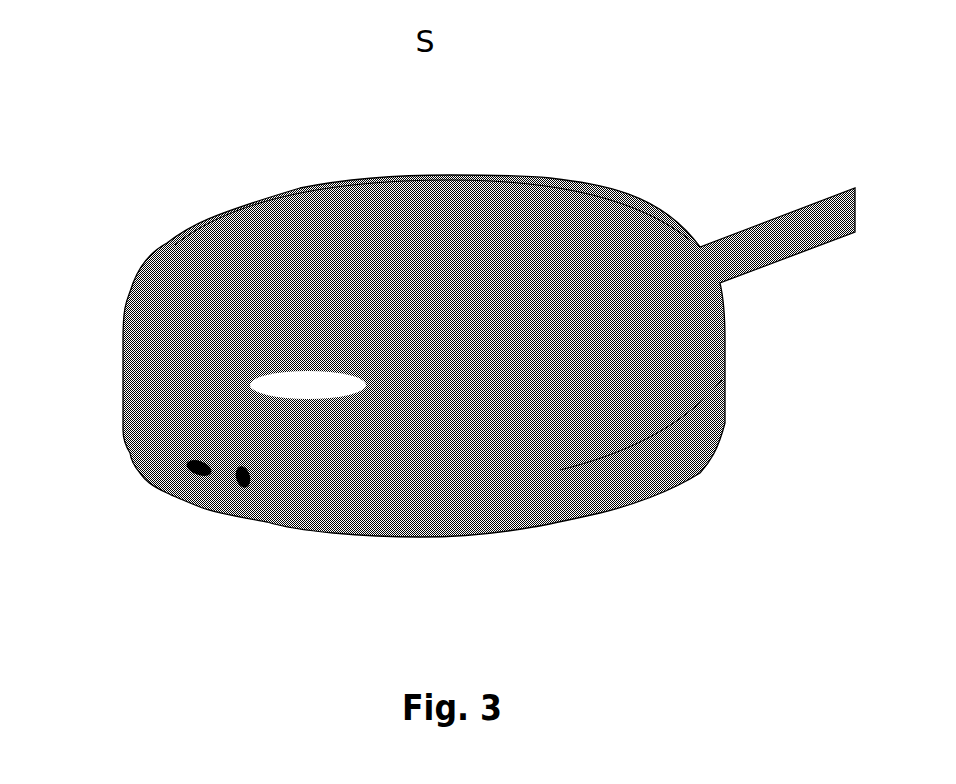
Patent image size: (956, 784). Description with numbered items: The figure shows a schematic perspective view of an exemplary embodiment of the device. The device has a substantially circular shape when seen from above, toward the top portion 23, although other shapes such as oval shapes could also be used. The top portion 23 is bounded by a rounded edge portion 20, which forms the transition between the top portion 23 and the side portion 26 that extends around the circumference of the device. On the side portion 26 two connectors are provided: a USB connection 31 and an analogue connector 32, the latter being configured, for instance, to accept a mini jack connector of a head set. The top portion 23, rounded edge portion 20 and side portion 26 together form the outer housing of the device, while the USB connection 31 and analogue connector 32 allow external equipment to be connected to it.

The rounded edge portion 20 is at (157, 298).
The top portion 23 is at (392, 217).
The side portion 26 is at (685, 413).
The USB connection 31 is at (188, 470).
The analogue connector 32 is at (245, 482).